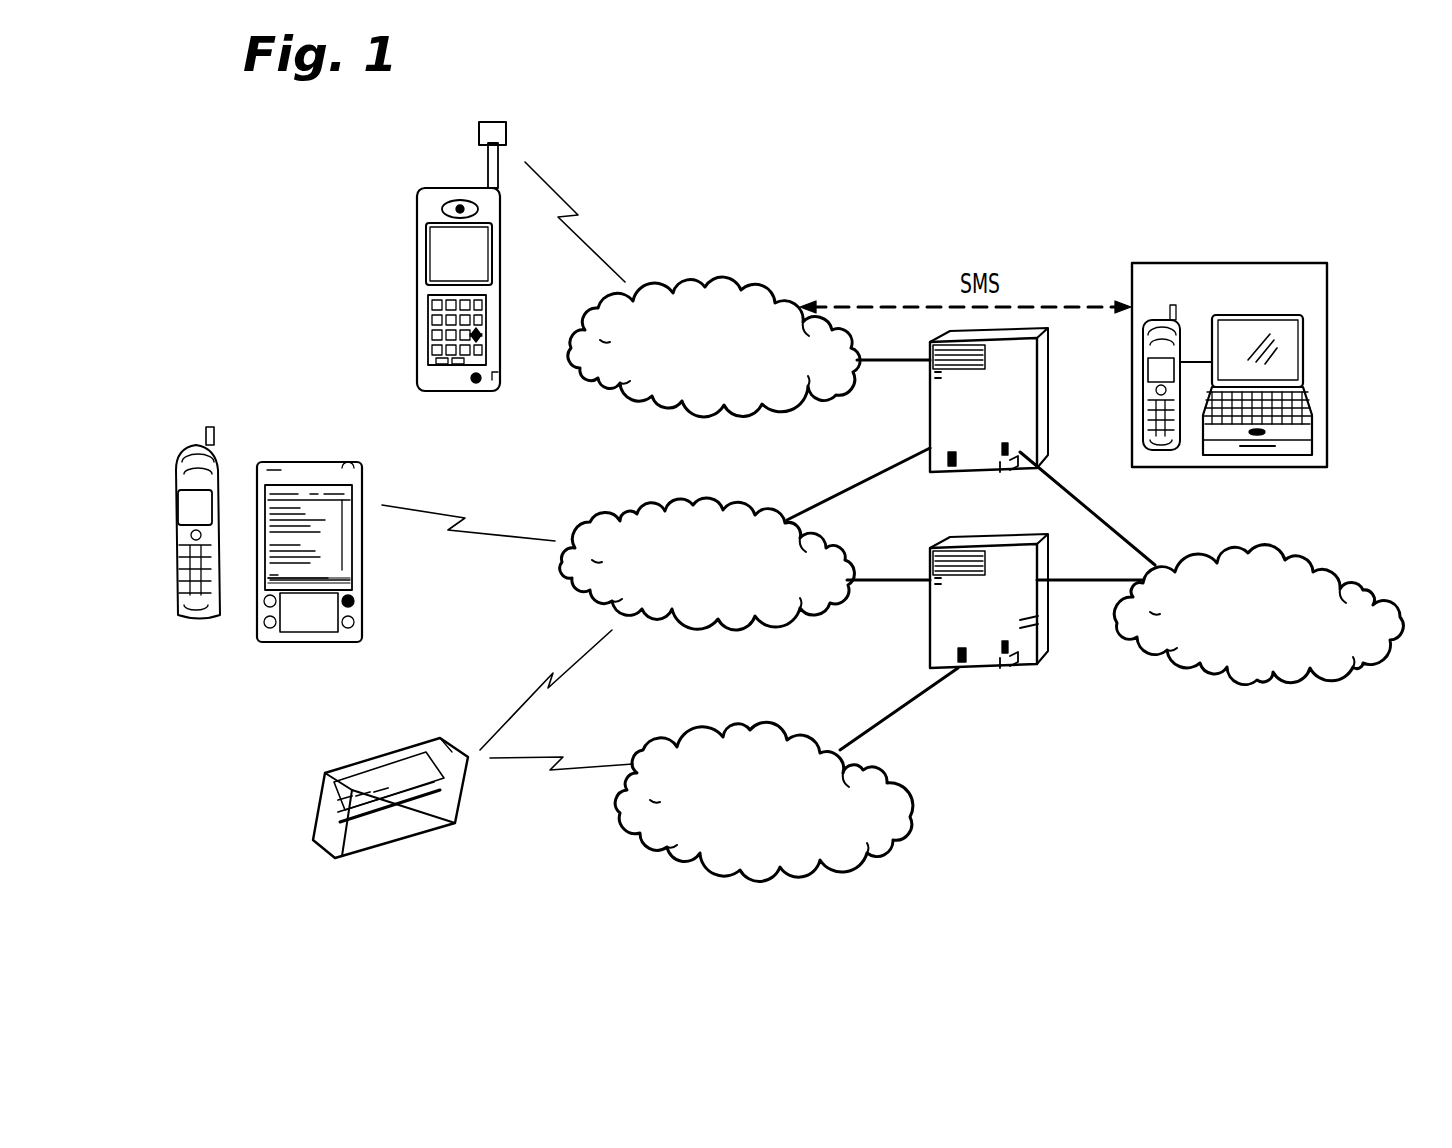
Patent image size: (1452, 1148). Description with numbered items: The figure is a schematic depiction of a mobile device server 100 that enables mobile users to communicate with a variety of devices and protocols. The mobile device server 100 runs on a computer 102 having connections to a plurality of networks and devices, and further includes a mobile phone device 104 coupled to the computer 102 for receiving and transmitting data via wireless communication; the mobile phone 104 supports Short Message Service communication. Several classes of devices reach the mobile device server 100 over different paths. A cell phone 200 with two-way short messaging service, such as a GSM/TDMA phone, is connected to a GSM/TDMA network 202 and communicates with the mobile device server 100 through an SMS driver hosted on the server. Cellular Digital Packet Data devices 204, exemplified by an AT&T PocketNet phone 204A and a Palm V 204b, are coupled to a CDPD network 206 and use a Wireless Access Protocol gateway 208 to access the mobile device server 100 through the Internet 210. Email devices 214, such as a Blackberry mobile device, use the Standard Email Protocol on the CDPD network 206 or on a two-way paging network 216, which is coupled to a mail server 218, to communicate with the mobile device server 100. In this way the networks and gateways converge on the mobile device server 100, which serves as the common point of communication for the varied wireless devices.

The mobile device server 100 is at (1229, 365).
The computer 102 is at (1265, 456).
The mobile phone device 104 is at (1158, 452).
The cell phone 200 is at (425, 190).
The GSM/TDMA network 202 is at (718, 284).
The CDPD devices 204 is at (368, 451).
The AT&T PocketNet phone 204A is at (212, 430).
The Palm V 204b is at (316, 462).
The CDPD network 206 is at (635, 510).
The WAP gateway 208 is at (930, 414).
The Internet 210 is at (1260, 683).
The email devices 214 is at (402, 836).
The two-way paging network 216 is at (745, 870).
The mail server 218 is at (1015, 656).